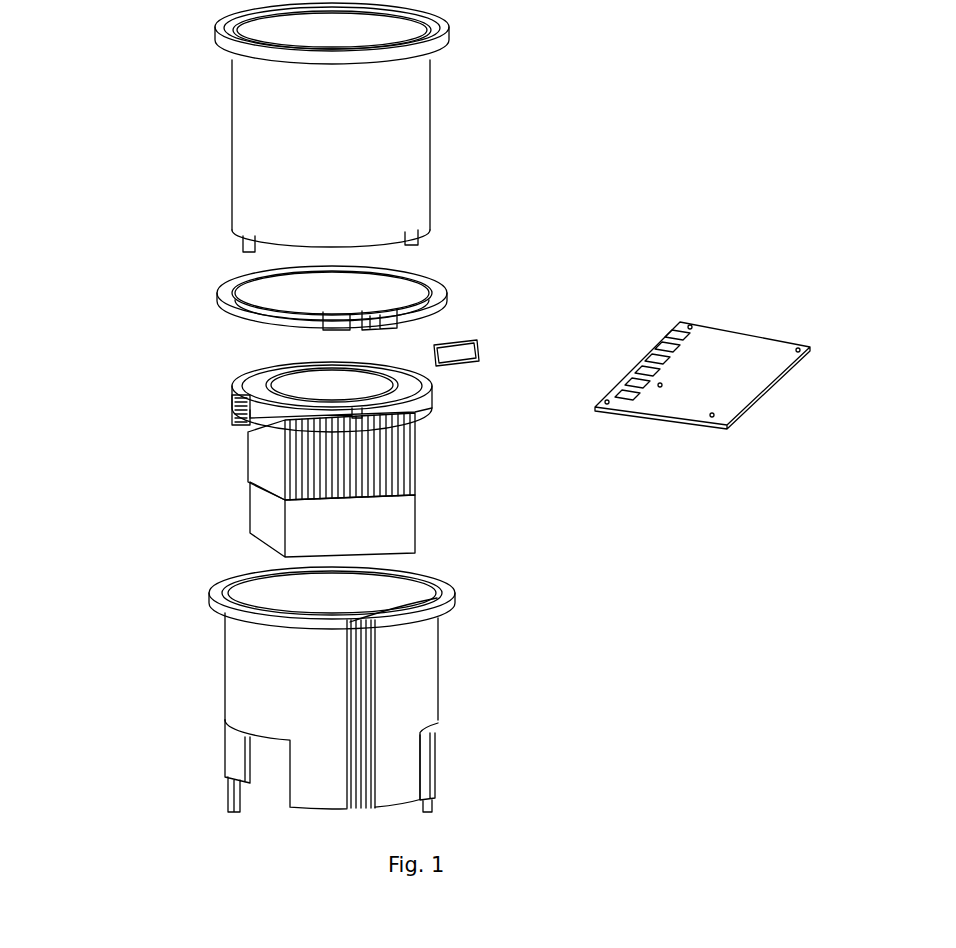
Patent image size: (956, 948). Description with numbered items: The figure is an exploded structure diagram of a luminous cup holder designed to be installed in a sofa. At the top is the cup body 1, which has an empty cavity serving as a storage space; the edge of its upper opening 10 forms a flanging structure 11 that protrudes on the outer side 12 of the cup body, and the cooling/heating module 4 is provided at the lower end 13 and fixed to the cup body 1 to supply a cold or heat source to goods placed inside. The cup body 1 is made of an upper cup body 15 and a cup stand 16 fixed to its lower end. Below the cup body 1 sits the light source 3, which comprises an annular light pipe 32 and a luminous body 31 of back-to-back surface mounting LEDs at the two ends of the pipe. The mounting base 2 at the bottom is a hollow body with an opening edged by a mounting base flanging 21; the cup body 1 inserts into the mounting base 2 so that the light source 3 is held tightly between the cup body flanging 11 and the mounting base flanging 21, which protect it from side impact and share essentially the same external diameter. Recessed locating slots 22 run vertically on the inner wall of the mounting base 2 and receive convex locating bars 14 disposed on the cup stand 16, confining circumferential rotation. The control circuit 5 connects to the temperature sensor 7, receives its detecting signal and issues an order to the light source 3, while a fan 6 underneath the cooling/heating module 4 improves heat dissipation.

The cup body 1 is at (97, 400).
The upper opening 10 is at (345, 30).
The flanging structure 11 is at (220, 22).
The outer side 12 is at (216, 131).
The lower end 13 is at (347, 250).
The locating bar 14 is at (432, 400).
The upper cup body 15 is at (232, 178).
The cup stand 16 is at (233, 385).
The mounting base 2 is at (407, 682).
The mounting base flanging 21 is at (453, 592).
The locating slot 22 is at (437, 603).
The light source 3 is at (534, 270).
The luminous body 31 is at (385, 327).
The light pipe 32 is at (430, 288).
The cooling/heating module 4 is at (418, 462).
The control circuit 5 is at (370, 523).
The fan 6 is at (625, 362).
The temperature sensor 7 is at (481, 348).